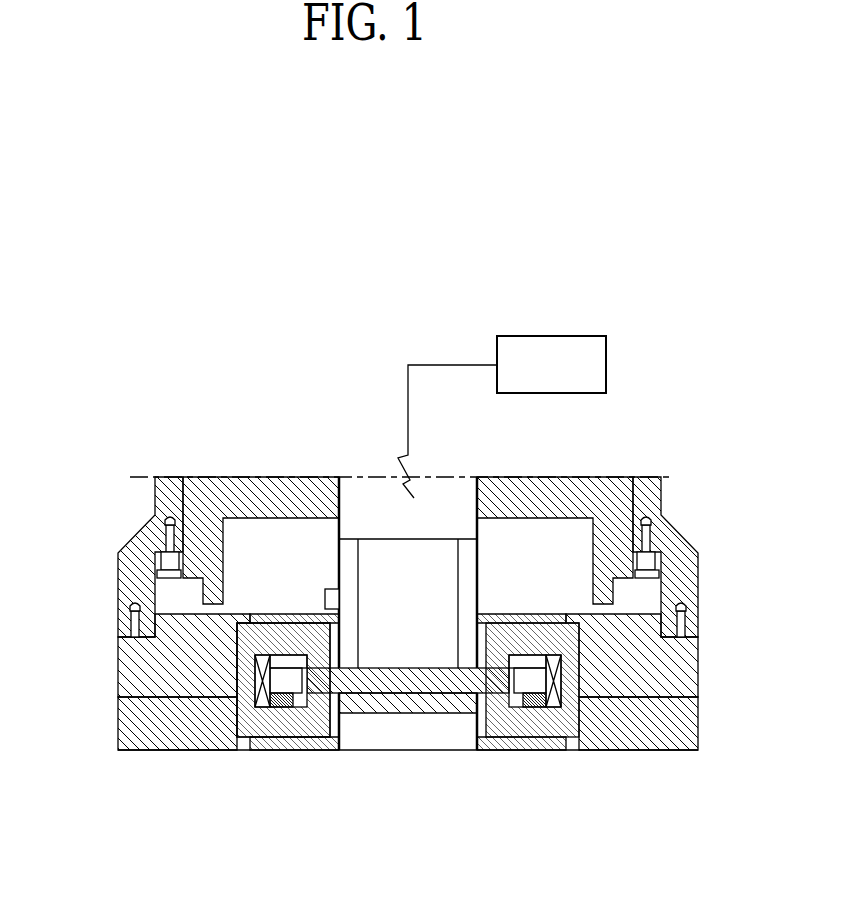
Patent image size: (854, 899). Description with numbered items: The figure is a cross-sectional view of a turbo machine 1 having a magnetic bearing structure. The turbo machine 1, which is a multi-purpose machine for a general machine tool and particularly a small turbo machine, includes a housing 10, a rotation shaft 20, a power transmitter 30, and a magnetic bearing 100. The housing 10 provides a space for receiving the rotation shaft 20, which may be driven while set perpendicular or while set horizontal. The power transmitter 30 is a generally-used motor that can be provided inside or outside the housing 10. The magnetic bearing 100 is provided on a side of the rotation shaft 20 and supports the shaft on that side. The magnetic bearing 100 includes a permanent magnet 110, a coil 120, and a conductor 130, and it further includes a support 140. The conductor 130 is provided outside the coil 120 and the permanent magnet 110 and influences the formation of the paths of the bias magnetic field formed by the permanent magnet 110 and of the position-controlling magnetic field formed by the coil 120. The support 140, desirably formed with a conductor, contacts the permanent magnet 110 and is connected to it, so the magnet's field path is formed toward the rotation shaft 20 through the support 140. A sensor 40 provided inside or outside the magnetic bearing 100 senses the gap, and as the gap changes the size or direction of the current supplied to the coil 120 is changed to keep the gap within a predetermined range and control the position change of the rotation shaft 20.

The turbo machine 1 is at (138, 255).
The housing 10 is at (121, 580).
The rotation shaft 20 is at (433, 557).
The power transmitter 30 is at (548, 335).
The sensor 40 is at (333, 593).
The magnetic bearing 100 is at (163, 823).
The permanent magnet 110 is at (278, 705).
The coil 120 is at (258, 703).
The conductor 130 is at (320, 730).
The support 140 is at (287, 685).